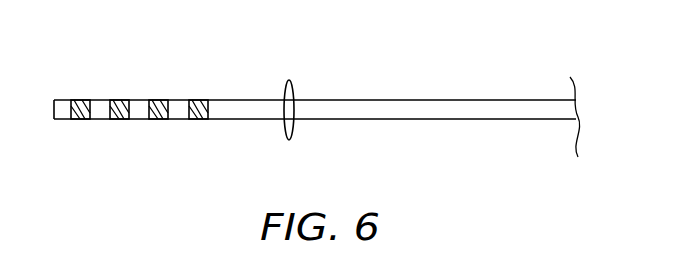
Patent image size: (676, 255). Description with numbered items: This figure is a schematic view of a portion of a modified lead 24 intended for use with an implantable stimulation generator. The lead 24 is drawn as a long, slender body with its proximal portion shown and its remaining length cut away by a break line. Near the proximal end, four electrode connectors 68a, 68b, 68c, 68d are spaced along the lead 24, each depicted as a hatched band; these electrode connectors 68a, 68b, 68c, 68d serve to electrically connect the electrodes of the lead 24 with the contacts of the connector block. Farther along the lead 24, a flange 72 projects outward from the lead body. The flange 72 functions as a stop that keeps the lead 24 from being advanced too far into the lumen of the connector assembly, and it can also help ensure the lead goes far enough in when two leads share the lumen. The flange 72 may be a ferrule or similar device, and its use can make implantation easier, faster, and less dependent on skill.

The lead 24 is at (503, 74).
The electrode connector 68a is at (81, 119).
The electrode connector 68b is at (123, 100).
The electrode connector 68c is at (155, 119).
The electrode connector 68d is at (200, 100).
The flange 72 is at (289, 140).